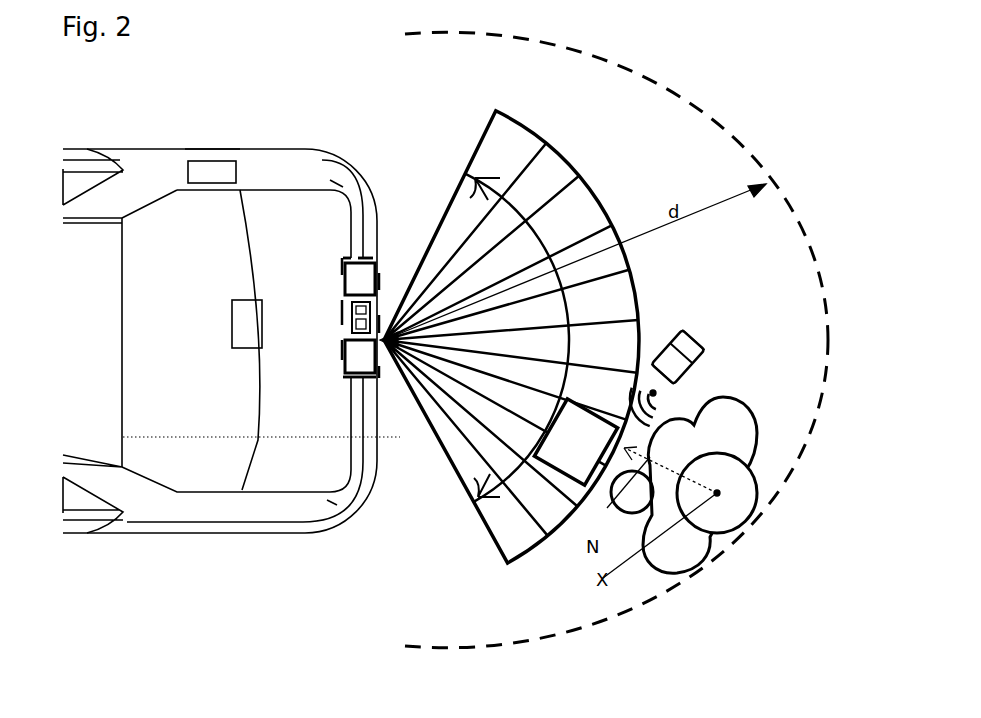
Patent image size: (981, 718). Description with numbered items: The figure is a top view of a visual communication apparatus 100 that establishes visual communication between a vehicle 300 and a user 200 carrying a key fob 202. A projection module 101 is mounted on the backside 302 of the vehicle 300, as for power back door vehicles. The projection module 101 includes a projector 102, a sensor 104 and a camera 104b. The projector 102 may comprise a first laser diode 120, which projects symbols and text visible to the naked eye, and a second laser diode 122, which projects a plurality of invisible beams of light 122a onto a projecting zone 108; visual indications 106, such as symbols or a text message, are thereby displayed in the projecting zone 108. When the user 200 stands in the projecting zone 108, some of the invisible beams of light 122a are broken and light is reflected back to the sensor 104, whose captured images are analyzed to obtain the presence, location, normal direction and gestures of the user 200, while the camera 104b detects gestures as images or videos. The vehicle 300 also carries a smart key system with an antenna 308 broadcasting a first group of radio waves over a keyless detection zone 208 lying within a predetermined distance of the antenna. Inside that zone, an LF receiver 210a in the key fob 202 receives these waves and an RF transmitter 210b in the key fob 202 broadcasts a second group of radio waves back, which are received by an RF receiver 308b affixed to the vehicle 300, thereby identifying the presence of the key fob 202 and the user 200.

The visual communication apparatus 100 is at (259, 440).
The projection module 101 is at (376, 257).
The projector 102 is at (346, 322).
The sensor 104 is at (343, 378).
The camera 104b is at (343, 262).
The visual indications 106 is at (555, 472).
The projecting zone 108 is at (493, 110).
The first laser diode 120 is at (340, 280).
The second laser diode 122 is at (345, 336).
The invisible beams of light 122a is at (601, 222).
The user 200 is at (743, 403).
The key fob 202 is at (698, 348).
The keyless detection zone 208 is at (743, 143).
The LF receiver 210a is at (677, 336).
The RF transmitter 210b is at (693, 360).
The vehicle 300 is at (226, 149).
The backside of the vehicle 302 is at (313, 494).
The antenna 308 is at (235, 300).
The RF receiver 308b is at (190, 161).